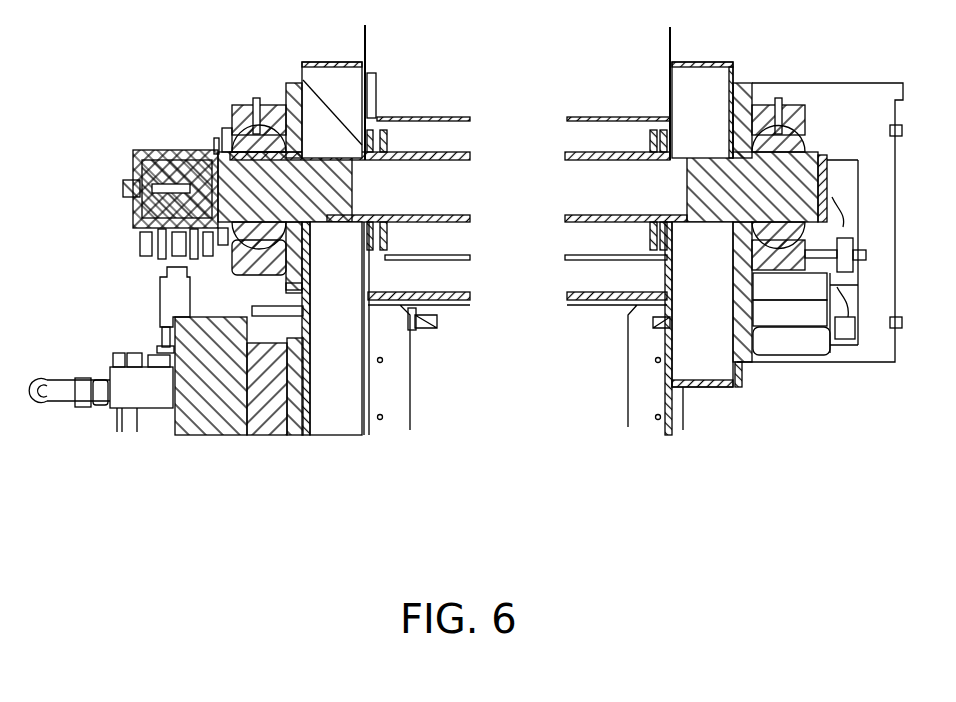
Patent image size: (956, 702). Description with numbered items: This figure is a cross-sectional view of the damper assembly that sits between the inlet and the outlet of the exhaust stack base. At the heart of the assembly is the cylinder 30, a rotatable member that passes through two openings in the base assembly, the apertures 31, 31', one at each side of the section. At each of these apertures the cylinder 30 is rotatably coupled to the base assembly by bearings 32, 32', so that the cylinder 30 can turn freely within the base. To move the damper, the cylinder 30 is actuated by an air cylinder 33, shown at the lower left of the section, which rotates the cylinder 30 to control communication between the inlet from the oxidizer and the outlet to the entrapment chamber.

The cylinder 30 is at (455, 152).
The aperture 31 is at (298, 101).
The bearing 32 is at (221, 116).
The air cylinder 33 is at (162, 298).
The aperture 31' is at (739, 88).
The bearing 32' is at (807, 125).